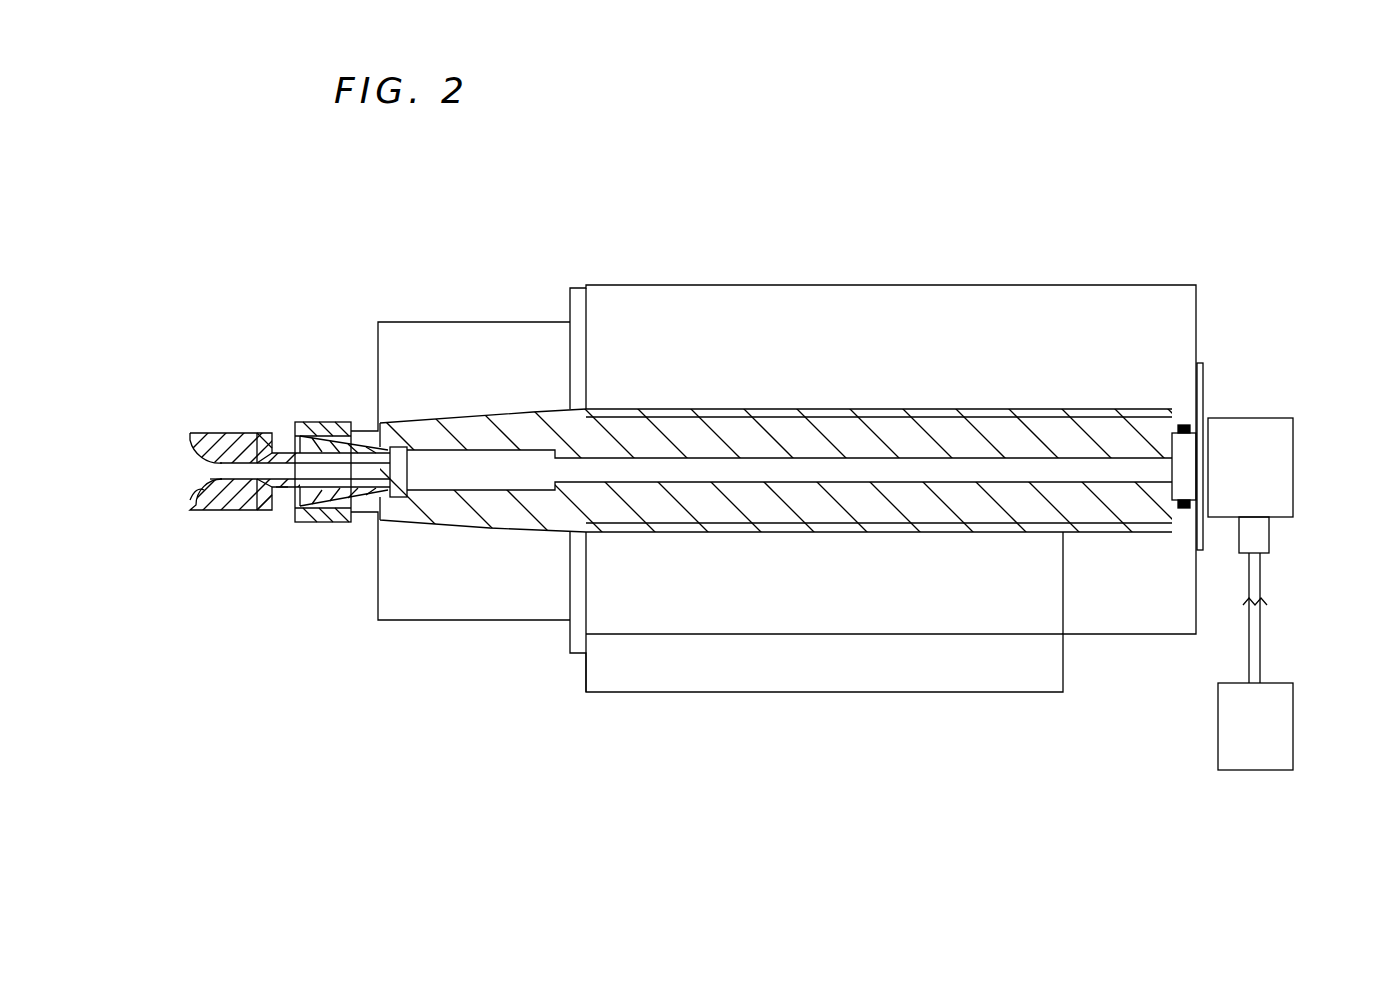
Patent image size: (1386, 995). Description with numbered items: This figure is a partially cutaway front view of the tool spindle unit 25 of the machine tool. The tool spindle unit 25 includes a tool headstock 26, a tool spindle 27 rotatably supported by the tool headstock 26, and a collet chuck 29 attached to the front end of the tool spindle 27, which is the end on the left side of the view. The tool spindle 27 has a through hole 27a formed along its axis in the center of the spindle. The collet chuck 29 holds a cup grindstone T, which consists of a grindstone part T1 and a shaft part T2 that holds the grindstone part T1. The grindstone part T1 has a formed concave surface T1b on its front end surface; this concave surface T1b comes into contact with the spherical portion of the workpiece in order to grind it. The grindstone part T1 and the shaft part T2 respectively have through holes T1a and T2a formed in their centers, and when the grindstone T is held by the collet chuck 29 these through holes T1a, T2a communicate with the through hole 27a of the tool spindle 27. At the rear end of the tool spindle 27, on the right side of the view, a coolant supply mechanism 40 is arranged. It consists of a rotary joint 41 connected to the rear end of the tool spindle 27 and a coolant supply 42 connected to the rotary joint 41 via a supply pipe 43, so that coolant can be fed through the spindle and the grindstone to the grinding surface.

The tool spindle unit 25 is at (800, 242).
The tool headstock 26 is at (1008, 285).
The tool spindle 27 is at (486, 322).
The through hole 27a is at (487, 487).
The collet chuck 29 is at (333, 536).
The cup grindstone T is at (288, 352).
The grindstone part T1 is at (240, 432).
The shaft part T2 is at (266, 432).
The through hole T1a is at (226, 510).
The concave surface T1b is at (198, 508).
The through hole T2a is at (282, 492).
The coolant supply mechanism 40 is at (1302, 552).
The rotary joint 41 is at (1270, 418).
The coolant supply 42 is at (1262, 772).
The supply pipe 43 is at (1262, 592).